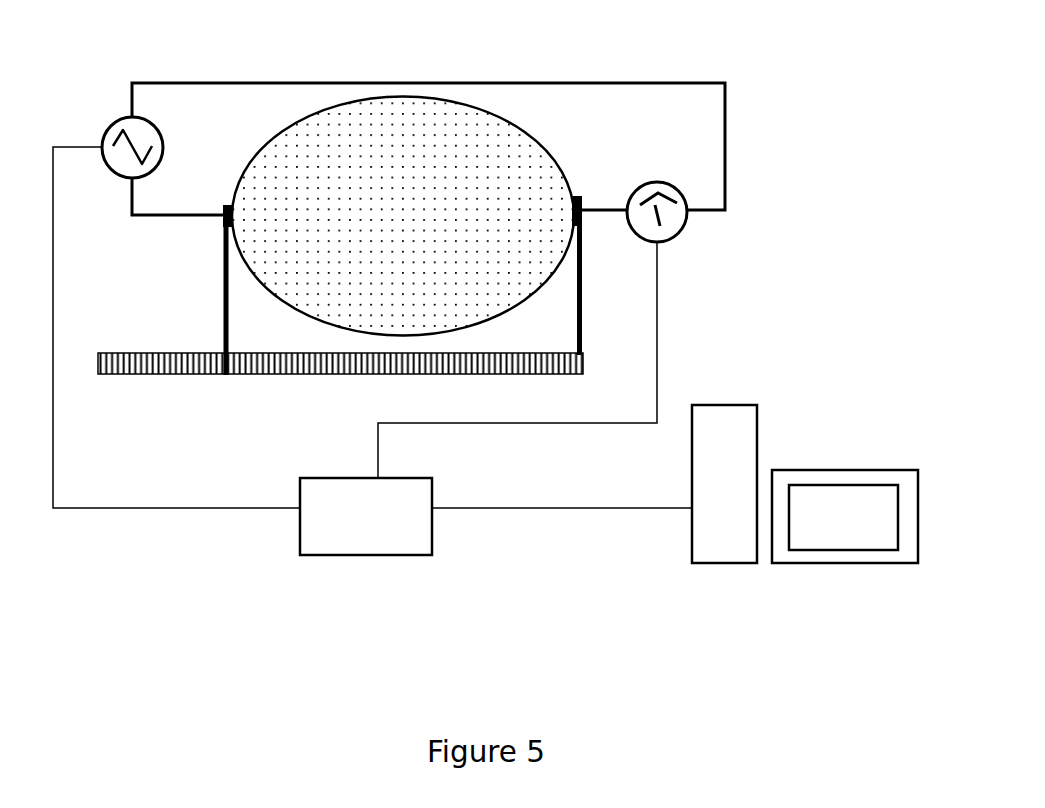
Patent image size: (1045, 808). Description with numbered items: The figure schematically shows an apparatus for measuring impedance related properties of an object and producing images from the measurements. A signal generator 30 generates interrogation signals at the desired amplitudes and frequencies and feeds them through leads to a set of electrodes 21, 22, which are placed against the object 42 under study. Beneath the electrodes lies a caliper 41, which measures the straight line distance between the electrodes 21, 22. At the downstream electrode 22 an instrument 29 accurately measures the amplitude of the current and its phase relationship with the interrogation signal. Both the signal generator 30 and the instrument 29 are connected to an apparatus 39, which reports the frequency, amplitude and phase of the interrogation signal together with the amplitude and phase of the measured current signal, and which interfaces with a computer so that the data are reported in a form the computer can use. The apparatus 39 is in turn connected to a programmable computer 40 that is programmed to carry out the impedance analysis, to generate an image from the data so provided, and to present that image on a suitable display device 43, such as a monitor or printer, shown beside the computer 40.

The electrode 21 is at (223, 223).
The electrode 22 is at (582, 198).
The instrument 29 is at (678, 230).
The signal generator 30 is at (113, 120).
The apparatus 39 is at (300, 492).
The programmable computer 40 is at (757, 438).
The caliper 41 is at (185, 353).
The sample 42 is at (398, 147).
The display device 43 is at (895, 469).